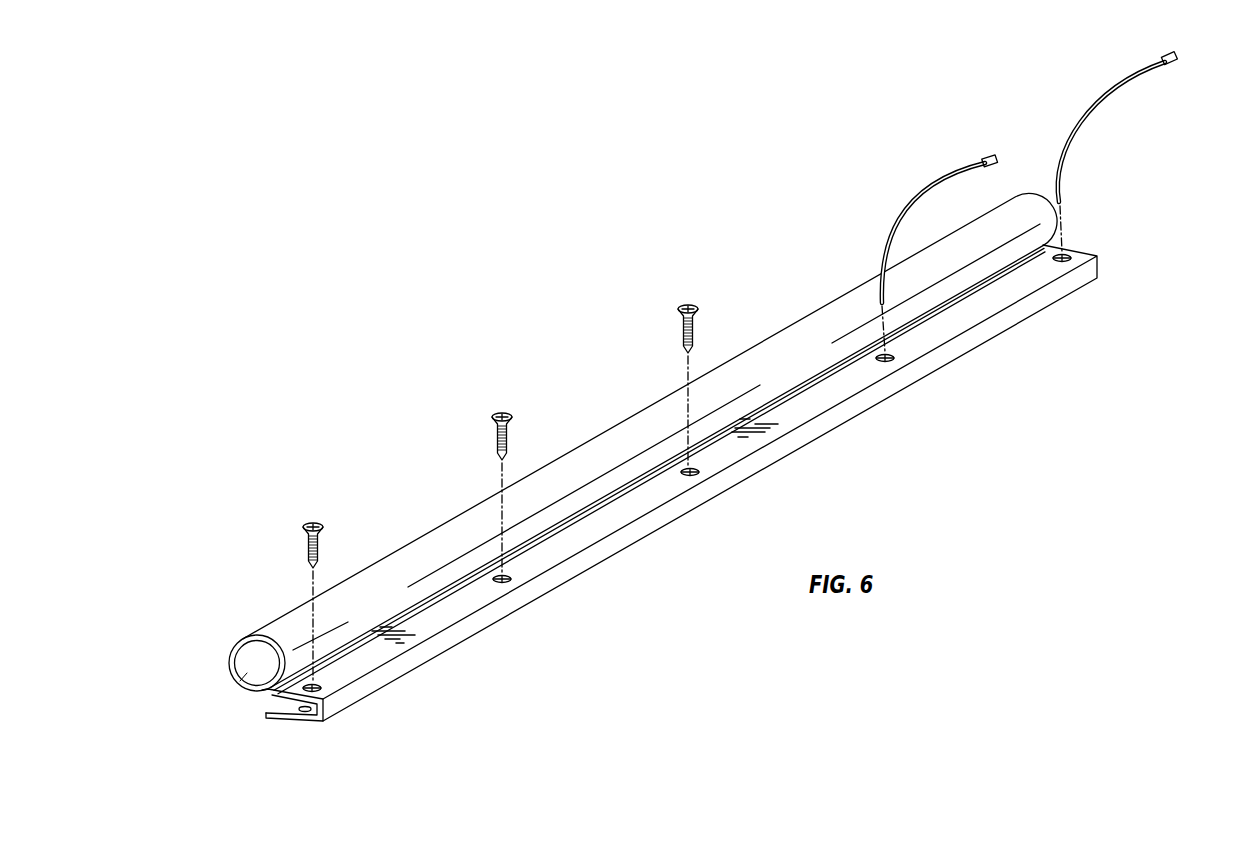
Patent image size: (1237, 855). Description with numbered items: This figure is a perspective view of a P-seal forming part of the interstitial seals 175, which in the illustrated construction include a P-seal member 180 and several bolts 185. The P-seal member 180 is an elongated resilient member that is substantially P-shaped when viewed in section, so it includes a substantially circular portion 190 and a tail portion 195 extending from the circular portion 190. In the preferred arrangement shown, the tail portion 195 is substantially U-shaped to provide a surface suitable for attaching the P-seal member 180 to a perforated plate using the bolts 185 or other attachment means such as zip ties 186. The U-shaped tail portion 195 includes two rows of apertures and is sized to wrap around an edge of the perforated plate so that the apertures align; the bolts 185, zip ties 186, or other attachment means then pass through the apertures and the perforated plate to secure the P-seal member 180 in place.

The interstitial seals 175 is at (522, 345).
The P-seal member 180 is at (268, 692).
The bolts 185 is at (308, 546).
The zip ties 186 is at (889, 226).
The circular portion 190 is at (441, 537).
The tail portion 195 is at (453, 602).